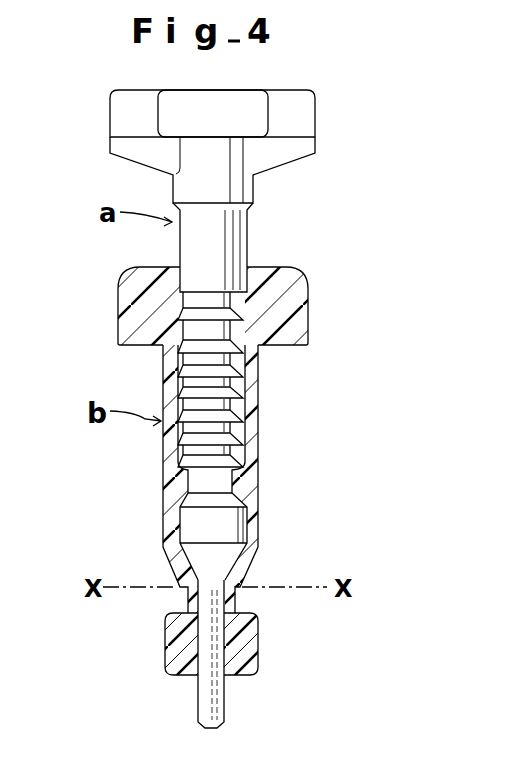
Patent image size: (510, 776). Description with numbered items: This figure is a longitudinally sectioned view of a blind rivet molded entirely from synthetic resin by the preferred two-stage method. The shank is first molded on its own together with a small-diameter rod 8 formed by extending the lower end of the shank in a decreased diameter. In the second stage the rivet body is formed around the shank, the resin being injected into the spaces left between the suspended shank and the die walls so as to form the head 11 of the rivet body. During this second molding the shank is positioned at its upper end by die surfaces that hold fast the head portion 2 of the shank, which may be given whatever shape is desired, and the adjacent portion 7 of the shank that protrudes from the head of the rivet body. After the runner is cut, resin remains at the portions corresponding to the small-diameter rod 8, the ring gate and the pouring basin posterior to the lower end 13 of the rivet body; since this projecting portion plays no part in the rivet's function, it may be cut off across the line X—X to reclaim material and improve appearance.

The head portion of the shank 2 is at (296, 117).
The adjacent portion of the shank 7 is at (233, 228).
The head of the rivet body 11 is at (297, 293).
The lower end of the rivet body 13 is at (242, 571).
The small-diameter rod 8 is at (214, 704).